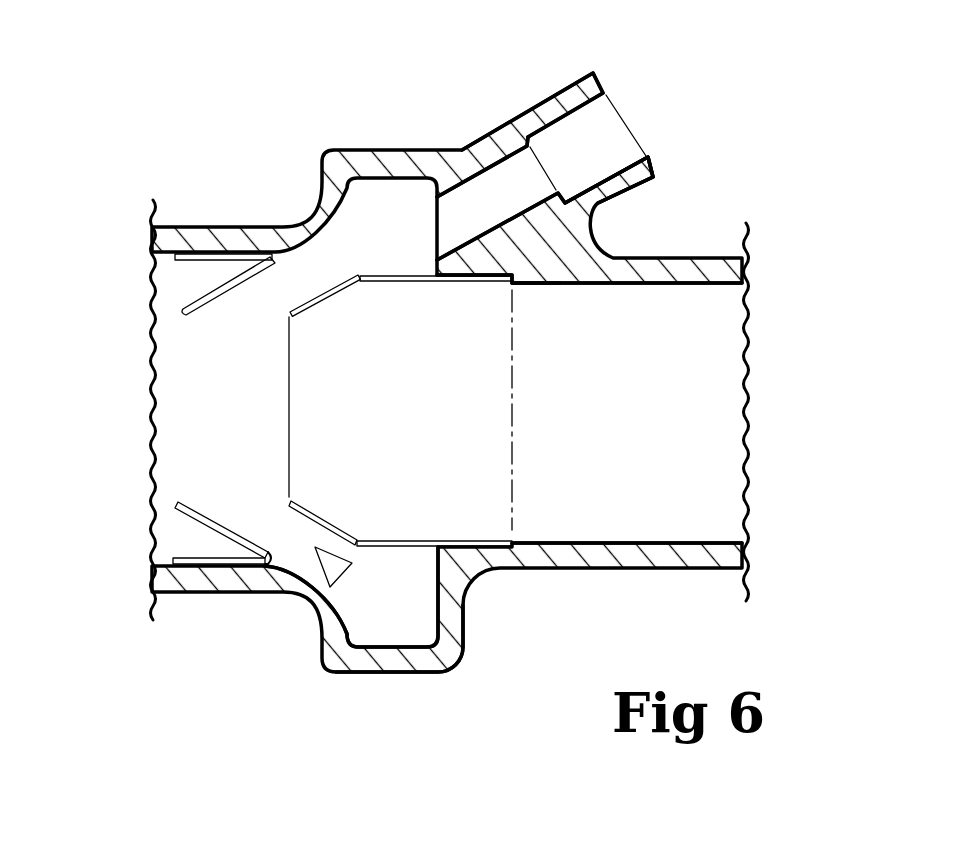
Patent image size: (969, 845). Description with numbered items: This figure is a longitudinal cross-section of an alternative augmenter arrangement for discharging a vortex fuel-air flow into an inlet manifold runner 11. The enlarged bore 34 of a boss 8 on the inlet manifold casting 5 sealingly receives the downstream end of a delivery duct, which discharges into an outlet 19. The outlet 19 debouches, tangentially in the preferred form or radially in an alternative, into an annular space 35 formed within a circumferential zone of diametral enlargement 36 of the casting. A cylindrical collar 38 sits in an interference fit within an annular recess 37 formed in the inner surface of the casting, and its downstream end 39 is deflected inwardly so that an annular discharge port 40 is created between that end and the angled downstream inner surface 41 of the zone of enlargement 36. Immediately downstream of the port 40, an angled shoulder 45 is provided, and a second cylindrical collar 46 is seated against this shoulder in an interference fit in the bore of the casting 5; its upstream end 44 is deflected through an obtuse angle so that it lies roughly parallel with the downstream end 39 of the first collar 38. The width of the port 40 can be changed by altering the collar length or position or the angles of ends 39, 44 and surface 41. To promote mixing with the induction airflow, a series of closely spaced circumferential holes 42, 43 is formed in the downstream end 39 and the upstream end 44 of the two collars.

The inlet manifold casting 5 is at (265, 0).
The boss 8 is at (553, 100).
The inlet manifold runner 11 is at (633, 433).
The outlet 19 is at (517, 173).
The enlarged bore 34 is at (598, 178).
The annular space 35 is at (398, 605).
The circumferential zone of diametral enlargement 36 is at (427, 663).
The annular recess 37 is at (500, 273).
The cylindrical collar 38 is at (415, 282).
The downstream end of cylindrical collar 39 is at (352, 525).
The annular discharge port 40 is at (272, 556).
The angled downstream inner surface 41 is at (320, 547).
The circumferential holes 42 is at (327, 293).
The circumferential holes 43 is at (223, 523).
The upstream end of cylindrical collar 44 is at (200, 298).
The angled shoulder 45 is at (276, 557).
The cylindrical collar 46 is at (203, 238).